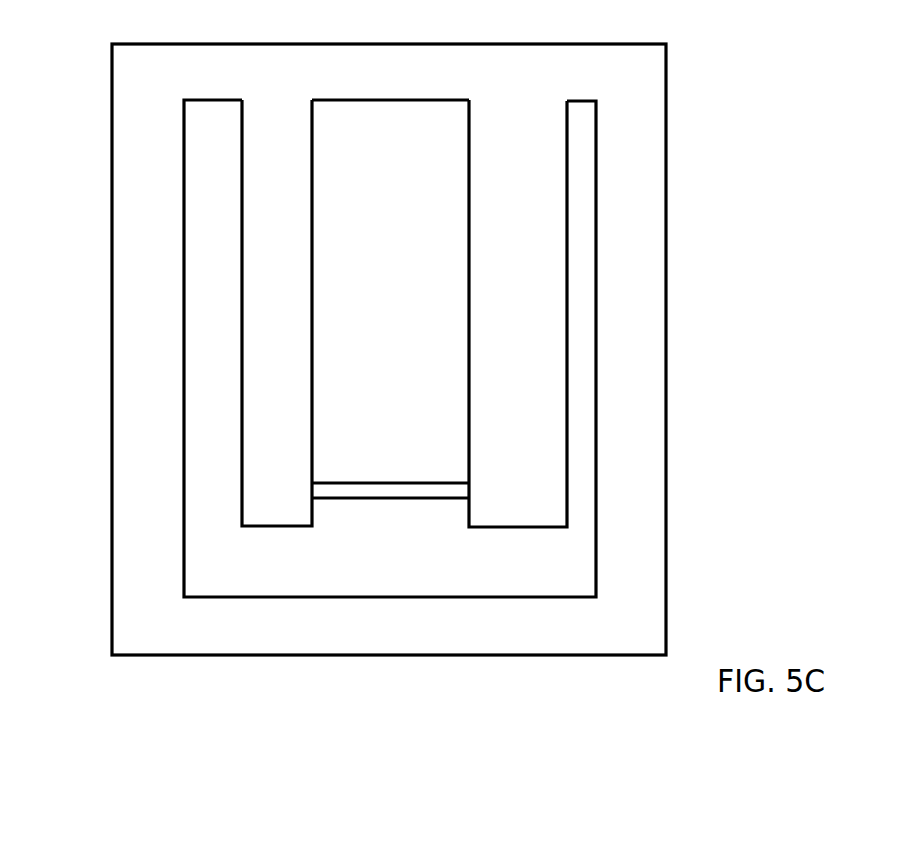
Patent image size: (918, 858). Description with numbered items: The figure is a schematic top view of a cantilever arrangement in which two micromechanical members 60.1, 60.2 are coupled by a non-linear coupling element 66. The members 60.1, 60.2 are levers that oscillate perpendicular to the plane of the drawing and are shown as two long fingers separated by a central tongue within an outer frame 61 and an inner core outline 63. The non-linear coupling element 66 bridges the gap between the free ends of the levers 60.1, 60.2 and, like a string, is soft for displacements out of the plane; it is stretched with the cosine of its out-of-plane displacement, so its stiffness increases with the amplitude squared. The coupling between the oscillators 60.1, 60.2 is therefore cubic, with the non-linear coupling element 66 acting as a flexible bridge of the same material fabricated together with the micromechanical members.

The magnetic core frame / outer housing 61 is at (630, 110).
The core body 63 is at (246, 572).
The micromechanical member 60.1 is at (270, 390).
The micromechanical member 60.2 is at (530, 412).
The non-linear coupling element 66 is at (395, 490).